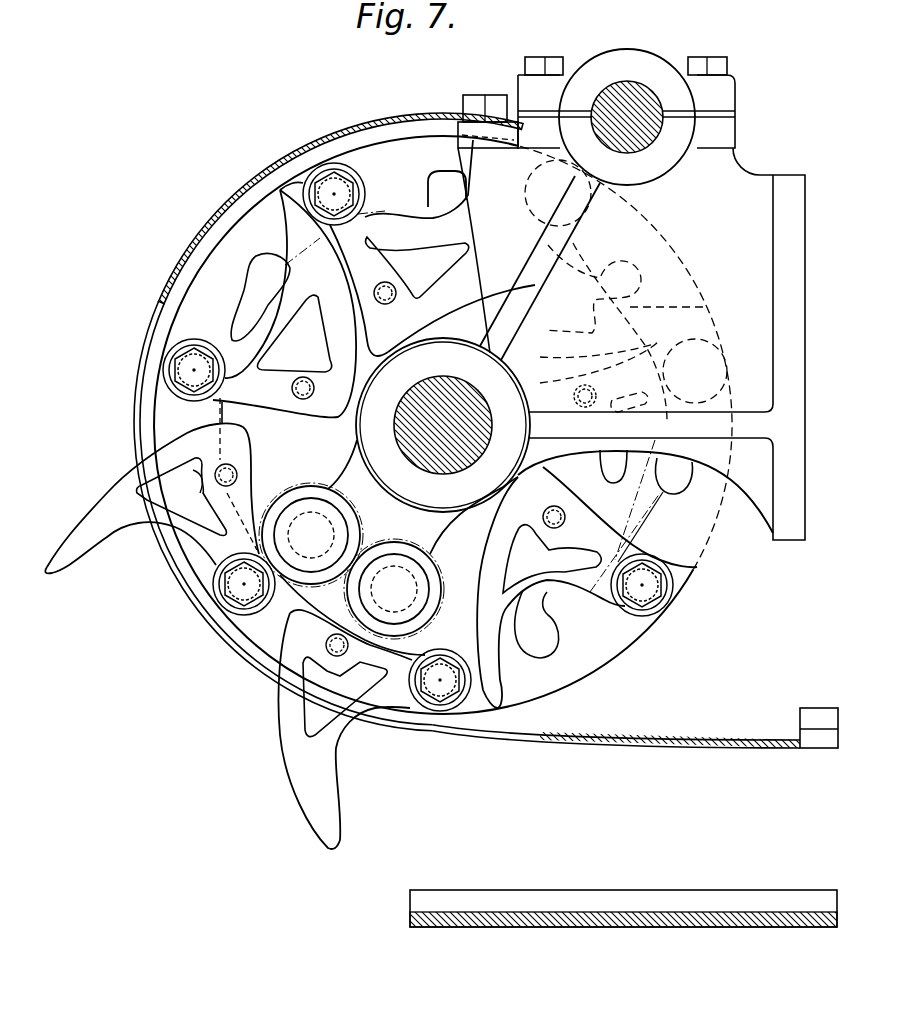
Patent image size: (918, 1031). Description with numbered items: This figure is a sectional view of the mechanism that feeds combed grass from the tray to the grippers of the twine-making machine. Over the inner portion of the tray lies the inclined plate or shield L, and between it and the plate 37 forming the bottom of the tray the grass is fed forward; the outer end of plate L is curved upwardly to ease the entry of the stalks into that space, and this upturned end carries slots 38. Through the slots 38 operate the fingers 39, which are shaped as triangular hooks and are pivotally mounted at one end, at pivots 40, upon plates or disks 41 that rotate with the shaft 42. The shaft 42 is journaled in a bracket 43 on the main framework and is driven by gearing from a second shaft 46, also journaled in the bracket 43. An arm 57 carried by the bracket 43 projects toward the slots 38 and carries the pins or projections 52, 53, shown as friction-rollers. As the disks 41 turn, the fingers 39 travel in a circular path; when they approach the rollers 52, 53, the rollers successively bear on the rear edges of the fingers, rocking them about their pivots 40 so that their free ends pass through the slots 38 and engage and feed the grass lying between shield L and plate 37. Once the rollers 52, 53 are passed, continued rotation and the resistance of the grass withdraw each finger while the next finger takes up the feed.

The plate 37 is at (545, 915).
The slots 38 is at (177, 577).
The fingers 39 is at (112, 482).
The pivot 40 is at (228, 602).
The plates 41 is at (615, 642).
The shaft 42 is at (458, 395).
The bracket 43 is at (737, 177).
The shaft 46 is at (627, 92).
The friction-roller 52 is at (342, 520).
The friction-roller 53 is at (393, 555).
The guide 57 is at (348, 482).
The plate L is at (617, 736).